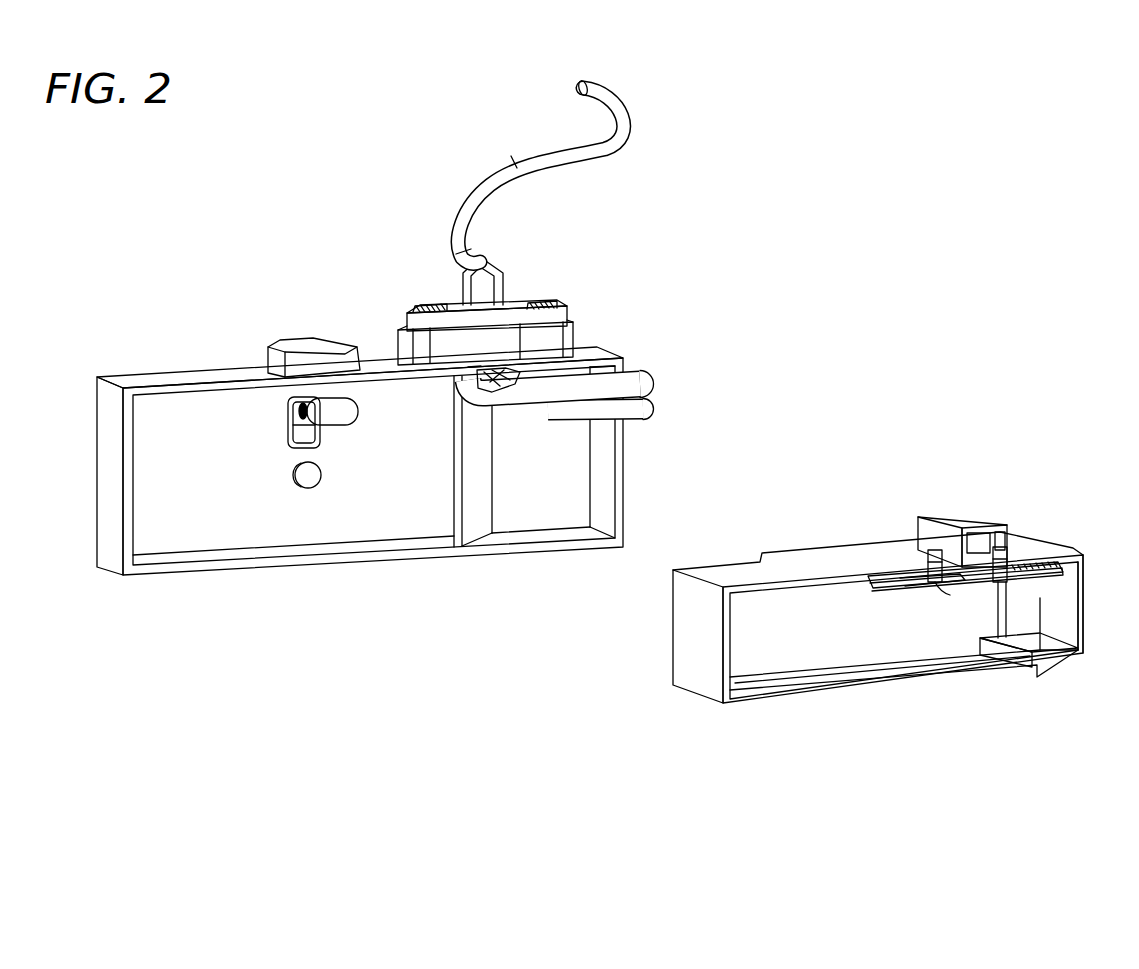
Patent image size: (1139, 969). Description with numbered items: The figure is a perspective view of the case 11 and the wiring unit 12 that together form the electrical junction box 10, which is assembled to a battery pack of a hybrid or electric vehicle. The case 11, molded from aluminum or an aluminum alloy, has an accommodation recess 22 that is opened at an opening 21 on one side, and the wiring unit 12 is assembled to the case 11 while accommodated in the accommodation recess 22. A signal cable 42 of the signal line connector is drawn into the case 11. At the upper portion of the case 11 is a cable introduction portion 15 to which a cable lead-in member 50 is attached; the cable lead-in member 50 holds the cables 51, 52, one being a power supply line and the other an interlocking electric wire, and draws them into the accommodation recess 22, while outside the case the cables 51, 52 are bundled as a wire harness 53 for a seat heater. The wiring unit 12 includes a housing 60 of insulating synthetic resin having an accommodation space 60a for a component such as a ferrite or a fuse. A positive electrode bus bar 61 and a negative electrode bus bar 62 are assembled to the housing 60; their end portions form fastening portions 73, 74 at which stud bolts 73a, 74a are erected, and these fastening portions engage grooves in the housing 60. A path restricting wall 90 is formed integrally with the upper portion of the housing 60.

The electrical junction box 10 is at (708, 316).
The case 11 is at (177, 365).
The wiring unit 12 is at (748, 704).
The cable introduction portion 15 is at (512, 378).
The opening 21 is at (222, 556).
The accommodation recess 22 is at (158, 490).
The signal cable 42 is at (341, 403).
The cable lead-in member 50 is at (447, 306).
The cable 51 is at (651, 412).
The cable 52 is at (641, 372).
The wire harness 53 is at (470, 183).
The housing 60 is at (693, 672).
The accommodation space 60a is at (793, 682).
The positive electrode bus bar 61 is at (880, 594).
The negative electrode bus bar 62 is at (1086, 603).
The fastening portion 73 is at (904, 590).
The stud bolt 73a is at (936, 580).
The fastening portion 74 is at (1004, 564).
The stud bolt 74a is at (1003, 641).
The path restricting wall 90 is at (957, 520).